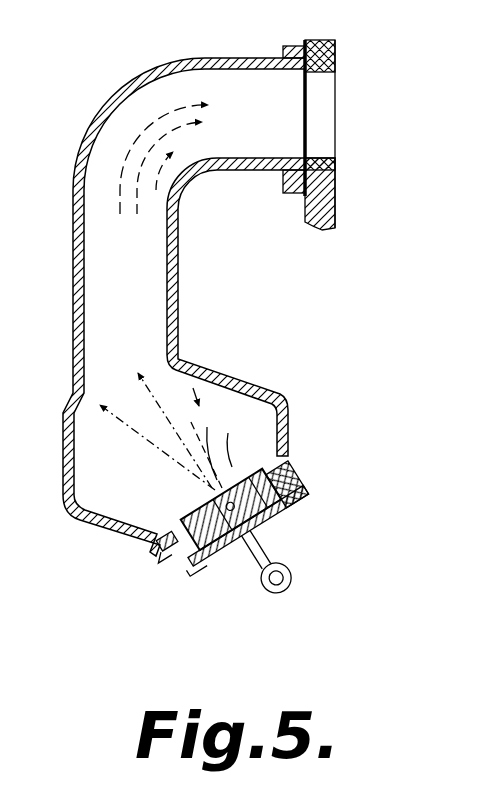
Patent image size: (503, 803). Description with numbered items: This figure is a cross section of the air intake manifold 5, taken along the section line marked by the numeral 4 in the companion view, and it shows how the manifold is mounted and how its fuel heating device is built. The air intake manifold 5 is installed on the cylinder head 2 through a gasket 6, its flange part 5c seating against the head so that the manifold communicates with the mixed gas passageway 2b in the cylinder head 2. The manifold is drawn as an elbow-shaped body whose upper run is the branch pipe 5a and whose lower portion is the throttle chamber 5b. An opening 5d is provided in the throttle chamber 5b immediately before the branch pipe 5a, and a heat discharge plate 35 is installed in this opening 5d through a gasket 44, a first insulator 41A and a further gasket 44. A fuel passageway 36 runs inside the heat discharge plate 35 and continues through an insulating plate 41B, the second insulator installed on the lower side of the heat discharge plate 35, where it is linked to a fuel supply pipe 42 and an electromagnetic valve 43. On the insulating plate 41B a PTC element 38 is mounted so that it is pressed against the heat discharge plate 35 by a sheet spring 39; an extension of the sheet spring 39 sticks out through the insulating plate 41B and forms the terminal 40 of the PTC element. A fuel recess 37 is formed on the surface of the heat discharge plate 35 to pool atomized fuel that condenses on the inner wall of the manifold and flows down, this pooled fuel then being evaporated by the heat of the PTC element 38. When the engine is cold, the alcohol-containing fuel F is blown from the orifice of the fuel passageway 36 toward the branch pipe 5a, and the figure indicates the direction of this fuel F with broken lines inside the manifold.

The cylinder head 2 is at (330, 42).
The mixed gas passageway 2b is at (328, 104).
The section line 4- 4 is at (130, 143).
The air intake manifold 5 is at (162, 63).
The branch pipe 5a is at (140, 261).
The throttle chamber 5b is at (138, 480).
The flange part 5c is at (288, 47).
The opening 5d is at (240, 503).
The gasket 6 is at (328, 162).
The heat discharge plate 35 is at (250, 509).
The fuel passageway 36 is at (165, 547).
The fuel recess 37 is at (265, 452).
The PTC element 38 is at (248, 526).
The sheet spring 39 is at (196, 568).
The terminal 40 is at (284, 543).
The first insulator 41A is at (287, 484).
The insulating plate (second insulator) 41B is at (279, 509).
The fuel supply pipe 42 is at (256, 550).
The electromagnetic valve 43 is at (275, 577).
The gasket 44 is at (305, 480).
The atomized fuel F is at (157, 397).